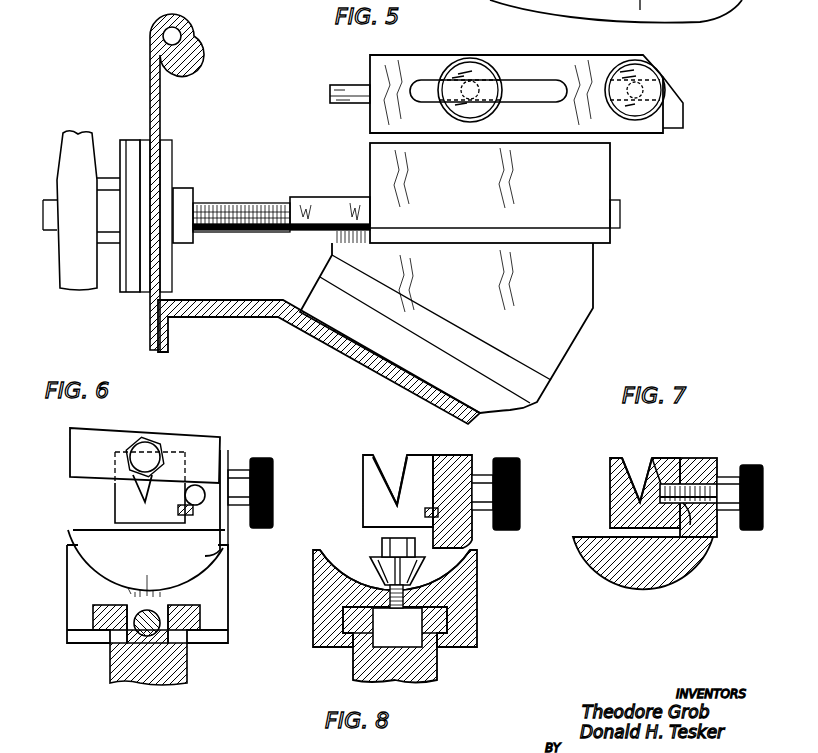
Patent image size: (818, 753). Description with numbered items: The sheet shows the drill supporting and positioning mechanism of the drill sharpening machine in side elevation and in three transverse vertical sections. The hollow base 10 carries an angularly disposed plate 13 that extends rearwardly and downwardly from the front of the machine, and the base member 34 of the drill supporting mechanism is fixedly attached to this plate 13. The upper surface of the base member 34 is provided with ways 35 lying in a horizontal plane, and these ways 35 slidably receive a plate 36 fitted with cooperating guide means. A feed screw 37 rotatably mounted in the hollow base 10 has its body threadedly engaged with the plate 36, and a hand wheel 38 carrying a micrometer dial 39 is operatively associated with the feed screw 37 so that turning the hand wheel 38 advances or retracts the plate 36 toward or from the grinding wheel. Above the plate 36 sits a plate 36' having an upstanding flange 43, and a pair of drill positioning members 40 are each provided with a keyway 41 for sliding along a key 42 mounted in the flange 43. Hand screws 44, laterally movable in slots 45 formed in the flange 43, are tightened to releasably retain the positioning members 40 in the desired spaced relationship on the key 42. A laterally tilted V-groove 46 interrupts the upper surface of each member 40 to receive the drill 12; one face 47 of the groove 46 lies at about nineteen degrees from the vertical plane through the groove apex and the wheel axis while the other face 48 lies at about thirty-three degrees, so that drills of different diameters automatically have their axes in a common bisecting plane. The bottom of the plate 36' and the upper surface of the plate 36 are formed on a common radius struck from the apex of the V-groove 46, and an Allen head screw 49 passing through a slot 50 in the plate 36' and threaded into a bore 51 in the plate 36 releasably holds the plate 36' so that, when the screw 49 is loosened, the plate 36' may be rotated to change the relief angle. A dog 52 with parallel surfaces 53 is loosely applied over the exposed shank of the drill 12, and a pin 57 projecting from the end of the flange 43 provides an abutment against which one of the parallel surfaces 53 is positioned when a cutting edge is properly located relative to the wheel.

In FIG. 5, the hollow base 10 is at (150, 54).
In FIG. 6, the drill 12 is at (148, 455).
In FIG. 5, the angularly disposed plate 13 is at (245, 310).
In FIG. 5, the base member 34 is at (572, 320).
In FIG. 6, the base member 34 is at (208, 670).
In FIG. 8, the base member 34 is at (437, 667).
In FIG. 5, the ways 35 is at (306, 200).
In FIG. 6, the ways 35 is at (108, 606).
In FIG. 5, the plate 36 is at (473, 227).
In FIG. 6, the plate 36 is at (169, 594).
In FIG. 8, the plate 36 is at (417, 598).
In FIG. 6, the plate 36' is at (169, 560).
In FIG. 8, the plate 36' is at (423, 563).
In FIG. 7, the plate 36' is at (635, 572).
In FIG. 5, the feed screw 37 is at (216, 210).
In FIG. 6, the feed screw 37 is at (112, 650).
In FIG. 5, the hand wheel 38 is at (80, 133).
In FIG. 5, the micrometer dial 39 is at (128, 140).
In FIG. 5, the drill positioning members 40 is at (648, 62).
In FIG. 6, the drill positioning members 40 is at (115, 497).
In FIG. 8, the drill positioning members 40 is at (364, 496).
In FIG. 7, the drill positioning members 40 is at (612, 493).
In FIG. 5, the keyway 41 is at (680, 108).
In FIG. 6, the keyway 41 is at (193, 515).
In FIG. 8, the keyway 41 is at (425, 518).
In FIG. 7, the keyway 41 is at (696, 514).
In FIG. 6, the key 42 is at (178, 510).
In FIG. 8, the key 42 is at (426, 509).
In FIG. 7, the key 42 is at (687, 520).
In FIG. 5, the upstanding flange 43 is at (543, 67).
In FIG. 6, the upstanding flange 43 is at (222, 452).
In FIG. 8, the upstanding flange 43 is at (462, 470).
In FIG. 7, the upstanding flange 43 is at (700, 460).
In FIG. 5, the hand screws 44 is at (478, 70).
In FIG. 6, the hand screws 44 is at (263, 458).
In FIG. 8, the hand screws 44 is at (512, 458).
In FIG. 7, the hand screws 44 is at (752, 465).
In FIG. 5, the slots 45 is at (532, 100).
In FIG. 7, the slots 45 is at (705, 490).
In FIG. 6, the V-groove 46 is at (147, 502).
In FIG. 8, the V-groove 46 is at (399, 462).
In FIG. 7, the V-groove 46 is at (644, 465).
In FIG. 8, the face of the V-groove 47 is at (408, 460).
In FIG. 7, the face of the V-groove 47 is at (657, 462).
In FIG. 8, the face of the V-groove 48 is at (378, 460).
In FIG. 7, the face of the V-groove 48 is at (623, 462).
In FIG. 8, the Allen head screw 49 is at (380, 550).
In FIG. 8, the slot 50 is at (385, 567).
In FIG. 8, the bore 51 is at (397, 627).
In FIG. 6, the dog 52 is at (102, 442).
In FIG. 6, the parallel surfaces 53 is at (72, 430).
In FIG. 5, the abutment surface (pin) 57 is at (350, 84).
In FIG. 6, the abutment surface (pin) 57 is at (202, 485).